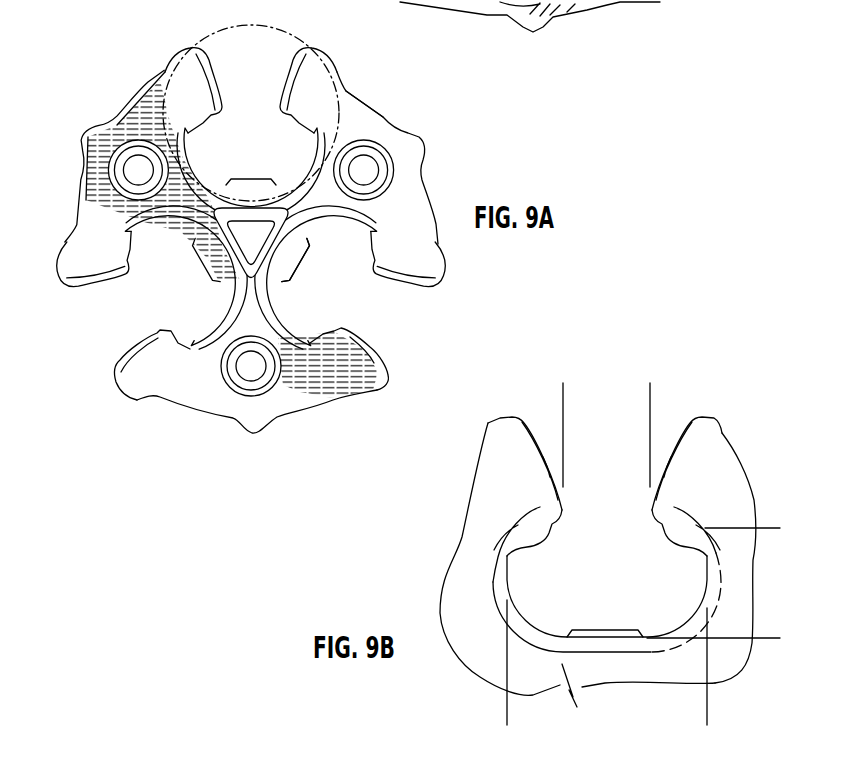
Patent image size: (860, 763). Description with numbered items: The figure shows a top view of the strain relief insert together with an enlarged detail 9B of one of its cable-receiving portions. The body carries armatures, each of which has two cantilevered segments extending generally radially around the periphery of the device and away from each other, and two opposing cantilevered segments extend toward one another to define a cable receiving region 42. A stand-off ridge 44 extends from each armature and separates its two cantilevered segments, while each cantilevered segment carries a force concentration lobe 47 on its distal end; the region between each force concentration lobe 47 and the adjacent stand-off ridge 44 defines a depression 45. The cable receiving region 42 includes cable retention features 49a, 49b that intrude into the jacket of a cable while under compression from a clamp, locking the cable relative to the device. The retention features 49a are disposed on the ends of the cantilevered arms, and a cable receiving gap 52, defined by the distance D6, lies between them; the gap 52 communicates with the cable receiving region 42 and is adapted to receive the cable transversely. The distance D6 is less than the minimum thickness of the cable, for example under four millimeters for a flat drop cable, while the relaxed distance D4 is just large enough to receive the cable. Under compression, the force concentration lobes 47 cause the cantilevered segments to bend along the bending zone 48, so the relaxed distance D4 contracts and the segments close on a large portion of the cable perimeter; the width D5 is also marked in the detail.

In FIG. 9A, the detail region shown in FIG. 9B is at (205, 30).
In FIG. 9A, the bending zone 48 is at (125, 129).
In FIG. 9A, the depression 45 is at (363, 97).
In FIG. 9A, the stand-off ridge 44 is at (418, 135).
In FIG. 9A, the cable retention feature 49a is at (125, 302).
In FIG. 9B, the cable retention feature 49a is at (512, 573).
In FIG. 9A, the cable retention feature 49b is at (308, 273).
In FIG. 9B, the cable retention feature 49b is at (735, 678).
In FIG. 9A, the force concentration lobe 47 is at (376, 392).
In FIG. 9B, the cable receiving region 42 is at (576, 556).
In FIG. 9B, the cable receiving gap 52 is at (653, 391).
In FIG. 9B, the relaxed distance D4 is at (773, 536).
In FIG. 9B, the slot width dimension D5 is at (699, 715).
In FIG. 9B, the distance D6 is at (658, 403).